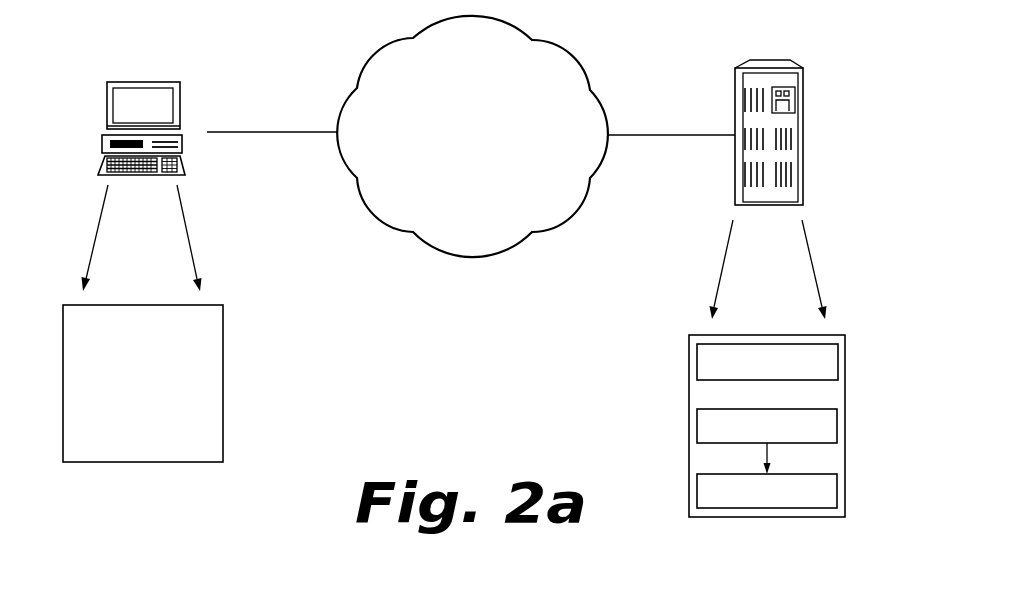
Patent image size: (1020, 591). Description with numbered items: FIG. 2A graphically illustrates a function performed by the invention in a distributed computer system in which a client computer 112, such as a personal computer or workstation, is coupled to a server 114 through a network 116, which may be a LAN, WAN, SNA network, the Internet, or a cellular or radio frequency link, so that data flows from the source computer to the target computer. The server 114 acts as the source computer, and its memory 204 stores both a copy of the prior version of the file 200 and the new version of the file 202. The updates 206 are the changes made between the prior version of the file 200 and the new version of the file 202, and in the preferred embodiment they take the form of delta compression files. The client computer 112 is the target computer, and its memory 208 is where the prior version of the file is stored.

The client computer 112 is at (143, 83).
The server 114 is at (770, 58).
The network 116 is at (570, 56).
The prior version of the file 200 is at (838, 362).
The new version of the file 202 is at (837, 427).
The memory of the source computer 204 is at (845, 336).
The updates 206 is at (837, 492).
The memory of the target computer 208 is at (223, 383).